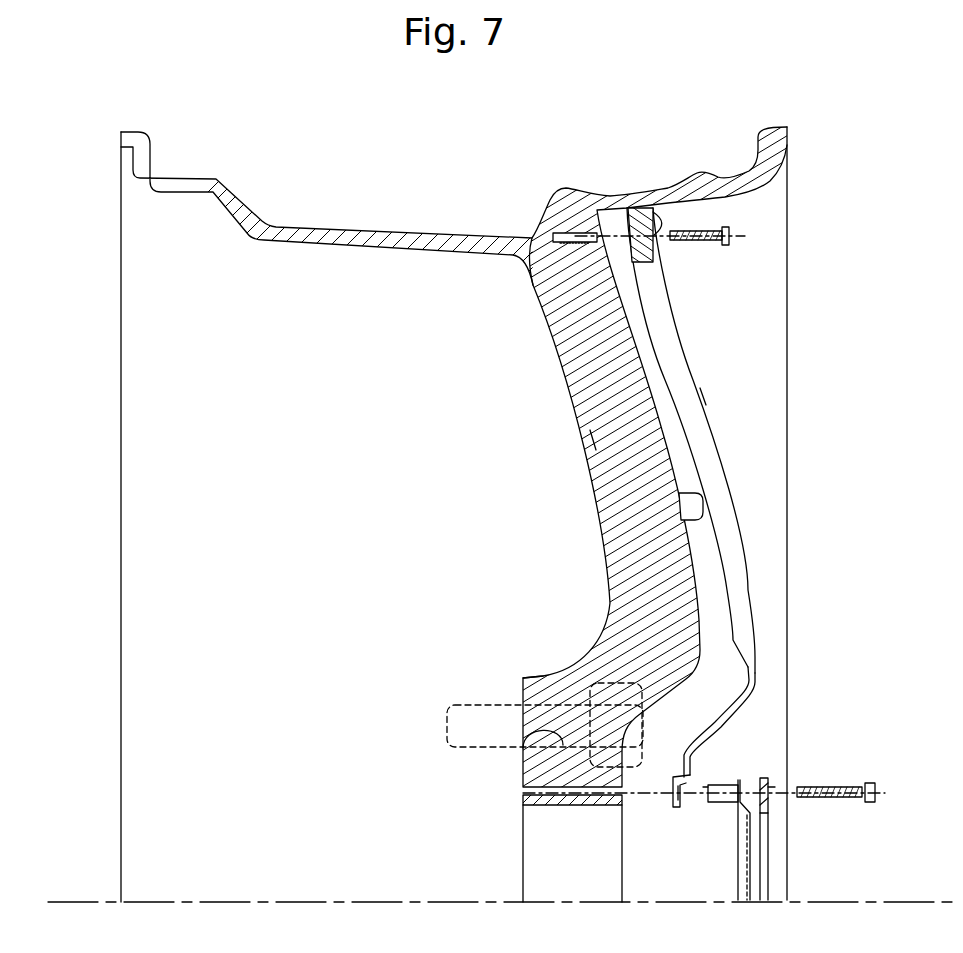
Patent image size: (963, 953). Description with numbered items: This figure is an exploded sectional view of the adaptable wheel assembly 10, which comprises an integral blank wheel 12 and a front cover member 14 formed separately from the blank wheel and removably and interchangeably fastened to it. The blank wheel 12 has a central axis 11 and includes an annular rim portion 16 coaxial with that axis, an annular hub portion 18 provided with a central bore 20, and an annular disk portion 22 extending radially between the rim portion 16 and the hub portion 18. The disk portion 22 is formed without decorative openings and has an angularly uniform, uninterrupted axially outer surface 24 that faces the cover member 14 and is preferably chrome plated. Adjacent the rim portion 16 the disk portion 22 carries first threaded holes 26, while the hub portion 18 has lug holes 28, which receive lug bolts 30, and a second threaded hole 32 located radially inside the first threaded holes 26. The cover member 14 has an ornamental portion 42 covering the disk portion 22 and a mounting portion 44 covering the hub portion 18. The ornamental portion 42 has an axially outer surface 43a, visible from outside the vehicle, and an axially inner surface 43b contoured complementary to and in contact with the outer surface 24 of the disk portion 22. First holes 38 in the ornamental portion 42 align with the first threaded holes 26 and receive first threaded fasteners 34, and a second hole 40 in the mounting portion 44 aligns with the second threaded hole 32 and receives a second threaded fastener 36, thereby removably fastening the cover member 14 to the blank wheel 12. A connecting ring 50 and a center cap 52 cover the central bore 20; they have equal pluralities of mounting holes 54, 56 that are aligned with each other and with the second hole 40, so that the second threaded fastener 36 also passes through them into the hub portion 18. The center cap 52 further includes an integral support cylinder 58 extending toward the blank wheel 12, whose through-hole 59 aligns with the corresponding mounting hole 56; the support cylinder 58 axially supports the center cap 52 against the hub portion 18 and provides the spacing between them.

The adaptable wheel assembly 10 is at (840, 125).
The central axis 11 is at (235, 902).
The integral blank wheel 12 is at (545, 347).
The front cover member 14 is at (640, 507).
The annular rim portion 16 is at (336, 232).
The annular hub portion 18 is at (538, 677).
The central bore 20 is at (553, 807).
The annular disk portion 22 is at (587, 433).
The axially outer surface 24 is at (680, 515).
The first threaded holes 26 is at (553, 233).
The lug holes 28 is at (523, 748).
The lug bolts 30 is at (477, 710).
The second threaded hole 32 is at (522, 792).
The first threaded fasteners 34 is at (731, 237).
The second threaded fasteners 36 is at (877, 793).
The first holes 38 is at (665, 220).
The second hole 40 is at (678, 790).
The ornamental portion 42 is at (683, 350).
The axially outer surface 43a is at (705, 393).
The axially inner surface 43b is at (680, 403).
The mounting portion 44 is at (723, 715).
The connecting ring 50 is at (785, 850).
The center cap 52 is at (730, 878).
The mounting holes 54 is at (770, 787).
The mounting holes 56 is at (740, 787).
The support cylinder 58 is at (722, 802).
The through-hole 59 is at (700, 787).